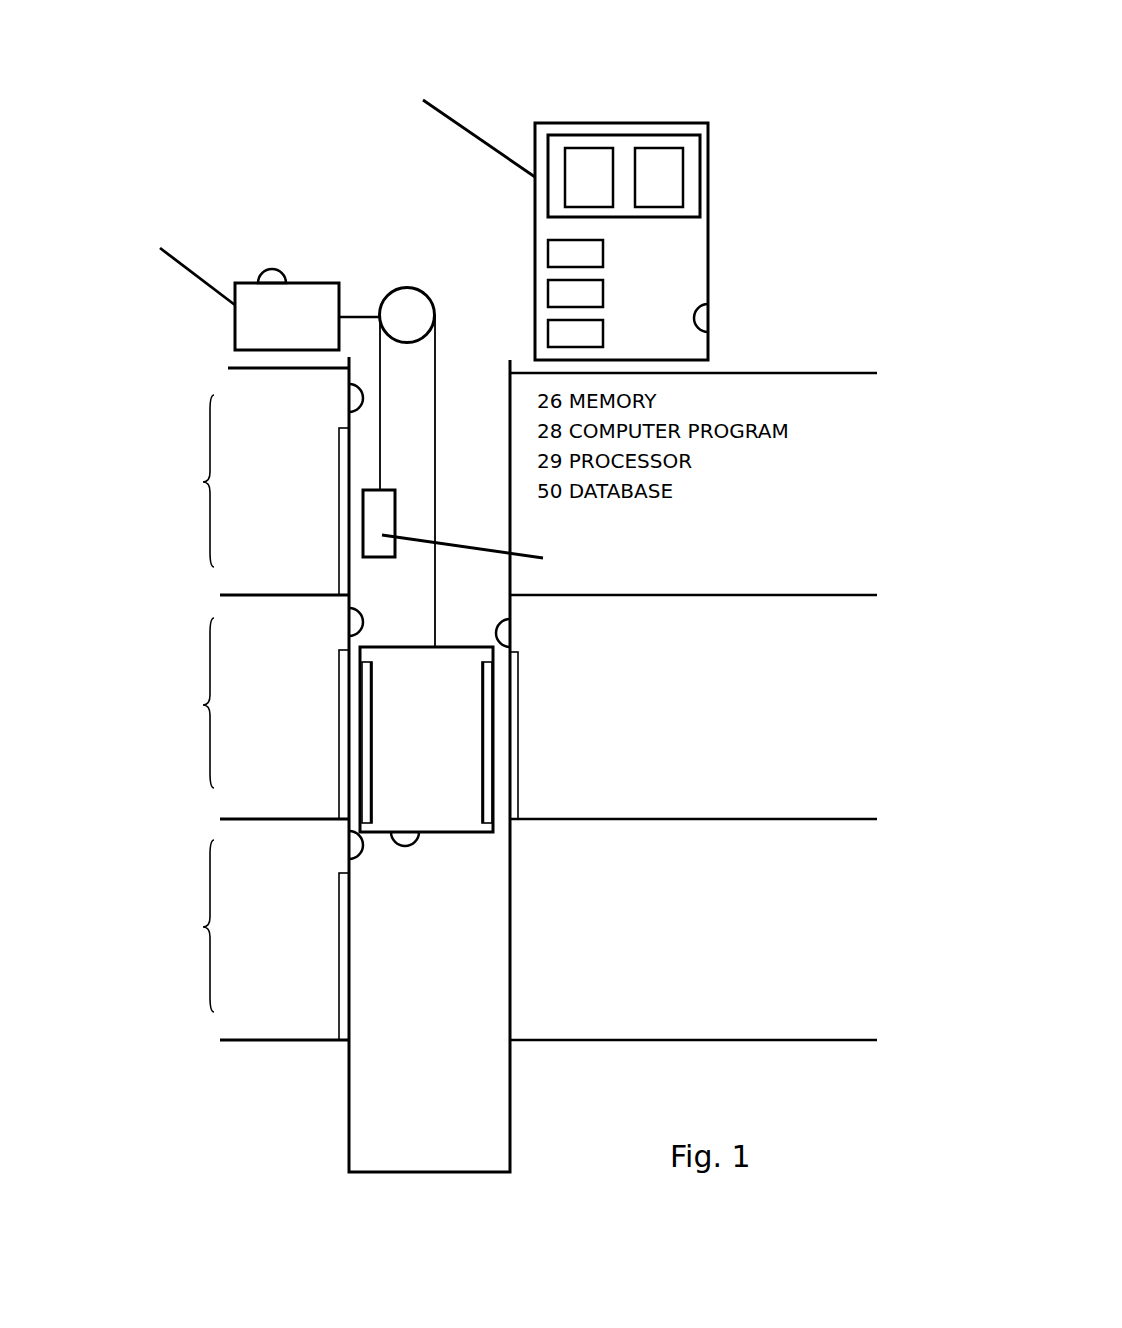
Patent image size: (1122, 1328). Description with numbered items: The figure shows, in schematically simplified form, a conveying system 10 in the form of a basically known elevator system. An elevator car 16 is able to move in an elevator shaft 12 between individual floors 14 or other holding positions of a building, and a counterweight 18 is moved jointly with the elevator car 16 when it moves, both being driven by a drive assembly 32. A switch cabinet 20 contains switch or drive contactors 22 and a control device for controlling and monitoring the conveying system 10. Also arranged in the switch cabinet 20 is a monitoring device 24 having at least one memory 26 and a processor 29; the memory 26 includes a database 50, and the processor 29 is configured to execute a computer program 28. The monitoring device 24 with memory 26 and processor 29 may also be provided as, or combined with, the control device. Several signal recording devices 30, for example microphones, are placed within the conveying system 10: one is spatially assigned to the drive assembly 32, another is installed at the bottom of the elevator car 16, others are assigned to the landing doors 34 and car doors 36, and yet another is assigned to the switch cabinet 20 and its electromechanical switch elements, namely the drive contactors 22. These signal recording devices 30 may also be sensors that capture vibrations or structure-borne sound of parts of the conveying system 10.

The conveying system 10 is at (325, 192).
The elevator shaft 12 is at (505, 437).
The floors 14 is at (190, 487).
The elevator car 16 is at (426, 802).
The counterweight 18 is at (395, 502).
The switch cabinet 20 is at (535, 150).
The drive contactors 22 is at (603, 253).
The monitoring device 24 is at (628, 133).
The memory 26 is at (575, 127).
The computer program 28 is at (718, 147).
The processor 29 is at (660, 162).
The signal recording device 30 is at (268, 268).
The drive assembly 32 is at (320, 280).
The landing doors 34 is at (338, 478).
The car doors 36 is at (482, 740).
The database 50 is at (592, 163).